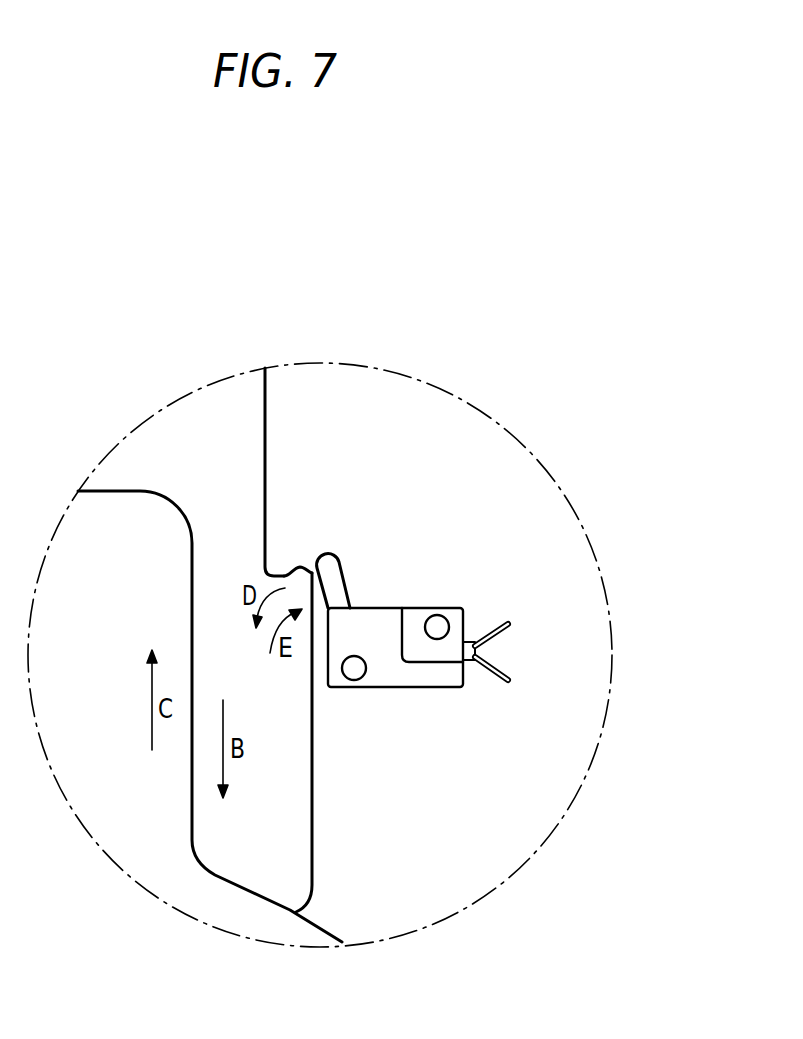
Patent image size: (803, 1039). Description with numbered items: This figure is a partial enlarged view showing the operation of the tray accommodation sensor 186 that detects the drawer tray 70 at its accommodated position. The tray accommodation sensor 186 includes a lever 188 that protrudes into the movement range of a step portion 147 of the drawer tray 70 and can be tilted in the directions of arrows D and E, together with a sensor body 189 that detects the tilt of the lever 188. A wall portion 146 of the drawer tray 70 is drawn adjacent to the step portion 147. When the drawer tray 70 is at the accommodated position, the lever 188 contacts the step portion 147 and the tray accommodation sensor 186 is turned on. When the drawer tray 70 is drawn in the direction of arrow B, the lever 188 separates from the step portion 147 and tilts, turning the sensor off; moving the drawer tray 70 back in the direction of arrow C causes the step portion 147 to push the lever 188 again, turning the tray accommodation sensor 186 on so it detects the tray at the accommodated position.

The drawer tray 70 is at (313, 823).
The wall portion 146 is at (227, 448).
The step portion 147 is at (303, 566).
The lever 188 is at (339, 564).
The tray accommodation sensor 186 is at (401, 688).
The sensor body 189 is at (383, 625).